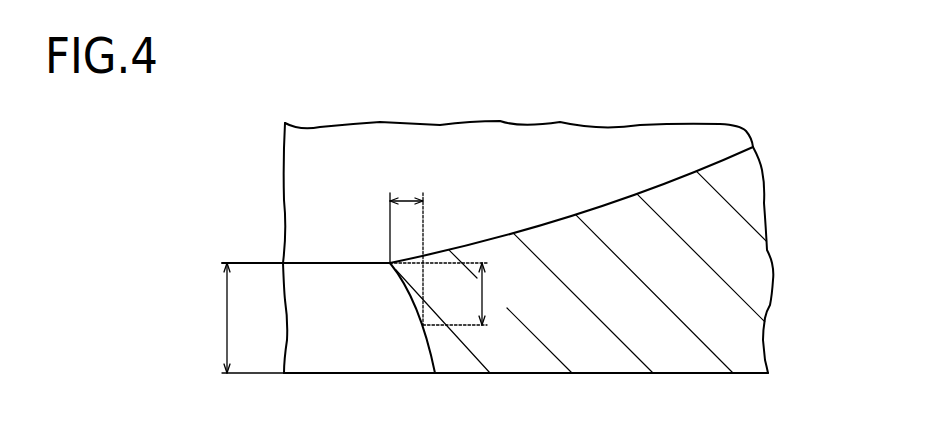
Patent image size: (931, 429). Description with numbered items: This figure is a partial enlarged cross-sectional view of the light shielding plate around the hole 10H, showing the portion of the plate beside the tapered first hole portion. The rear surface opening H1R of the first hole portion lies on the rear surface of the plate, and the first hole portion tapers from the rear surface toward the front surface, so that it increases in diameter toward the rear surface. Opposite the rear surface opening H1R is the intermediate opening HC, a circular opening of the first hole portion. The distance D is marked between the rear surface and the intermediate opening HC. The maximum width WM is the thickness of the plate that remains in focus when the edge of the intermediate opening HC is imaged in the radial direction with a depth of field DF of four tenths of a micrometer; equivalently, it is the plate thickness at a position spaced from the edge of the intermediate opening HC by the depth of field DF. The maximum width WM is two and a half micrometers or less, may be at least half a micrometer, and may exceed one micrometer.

The hole 10H is at (673, 180).
The intermediate opening HC is at (390, 263).
The rear surface opening H1R is at (434, 376).
The distance D is at (246, 318).
The depth of field DF is at (406, 246).
The maximum width WM is at (451, 294).